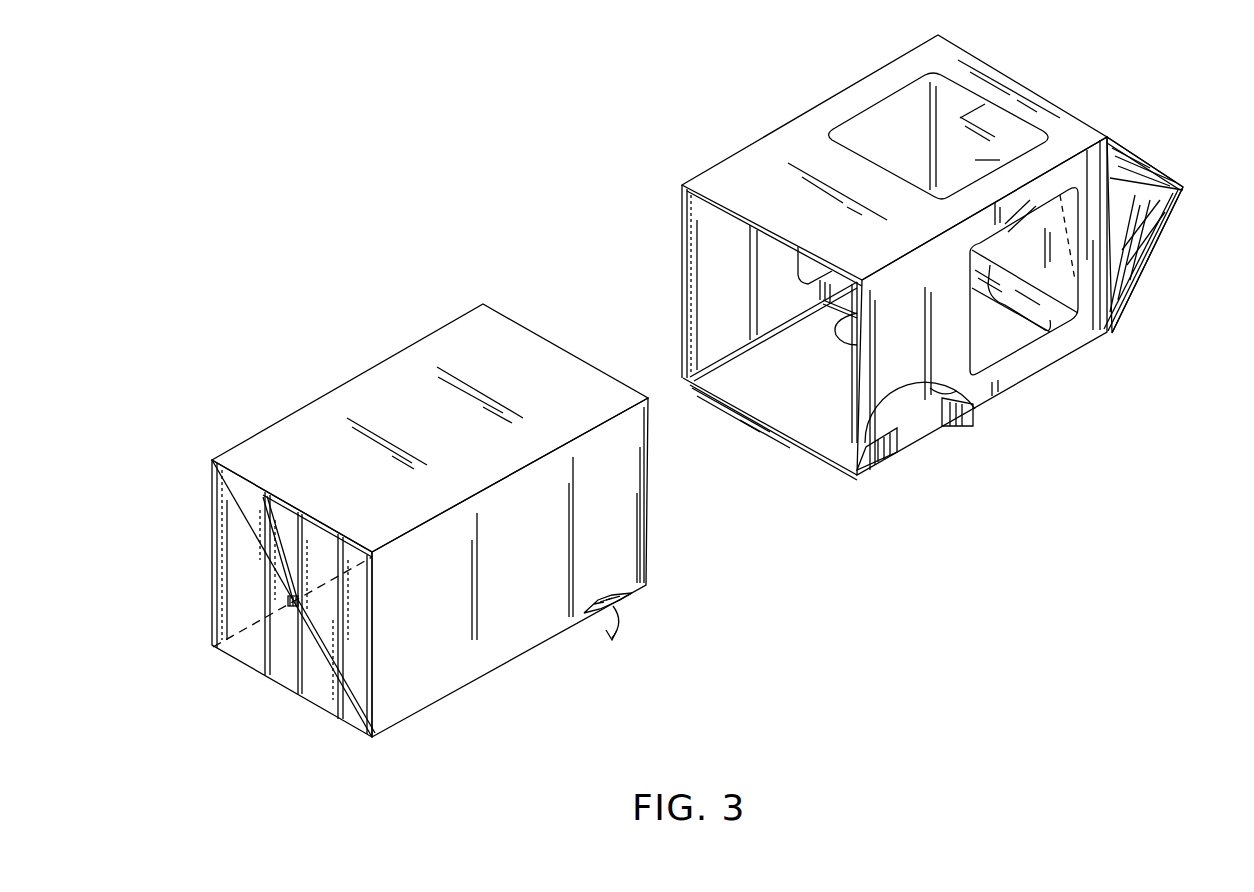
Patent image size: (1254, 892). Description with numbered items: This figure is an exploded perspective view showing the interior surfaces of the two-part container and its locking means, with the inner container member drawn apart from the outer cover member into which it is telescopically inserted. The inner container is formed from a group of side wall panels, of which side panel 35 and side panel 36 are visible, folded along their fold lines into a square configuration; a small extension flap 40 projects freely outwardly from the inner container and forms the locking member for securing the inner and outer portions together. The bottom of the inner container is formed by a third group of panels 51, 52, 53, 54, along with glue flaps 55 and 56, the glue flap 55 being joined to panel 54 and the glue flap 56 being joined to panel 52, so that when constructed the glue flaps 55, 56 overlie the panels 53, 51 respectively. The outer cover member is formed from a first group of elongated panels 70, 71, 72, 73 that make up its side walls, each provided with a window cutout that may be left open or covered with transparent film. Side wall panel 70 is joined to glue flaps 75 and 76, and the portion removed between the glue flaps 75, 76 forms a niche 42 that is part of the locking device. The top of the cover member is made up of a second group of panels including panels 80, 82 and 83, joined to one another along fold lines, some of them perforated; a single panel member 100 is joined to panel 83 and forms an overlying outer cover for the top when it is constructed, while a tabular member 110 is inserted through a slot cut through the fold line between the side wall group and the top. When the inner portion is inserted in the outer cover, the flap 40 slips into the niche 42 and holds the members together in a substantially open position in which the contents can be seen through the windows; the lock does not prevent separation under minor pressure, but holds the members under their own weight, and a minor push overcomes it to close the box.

The side panel 35 is at (448, 444).
The side panel 36 is at (535, 584).
The extension flap 40 is at (635, 598).
The niche 42 is at (913, 437).
The bottom panel 51 is at (340, 705).
The bottom panel 52 is at (240, 563).
The bottom panel 53 is at (240, 487).
The bottom panel 54 is at (355, 640).
The glue flap 55 is at (287, 533).
The glue flap 56 is at (280, 638).
The side wall panel 70 is at (803, 406).
The side wall panel 71 is at (735, 303).
The side wall panel 72 is at (873, 192).
The side wall panel 73 is at (963, 335).
The glue flap 75 is at (950, 412).
The glue flap 76 is at (879, 462).
The top panel 80 is at (1128, 242).
The top panel 82 is at (1147, 165).
The top panel 83 is at (1127, 148).
The single panel member 100 is at (1140, 283).
The tabular member 110 is at (1012, 295).